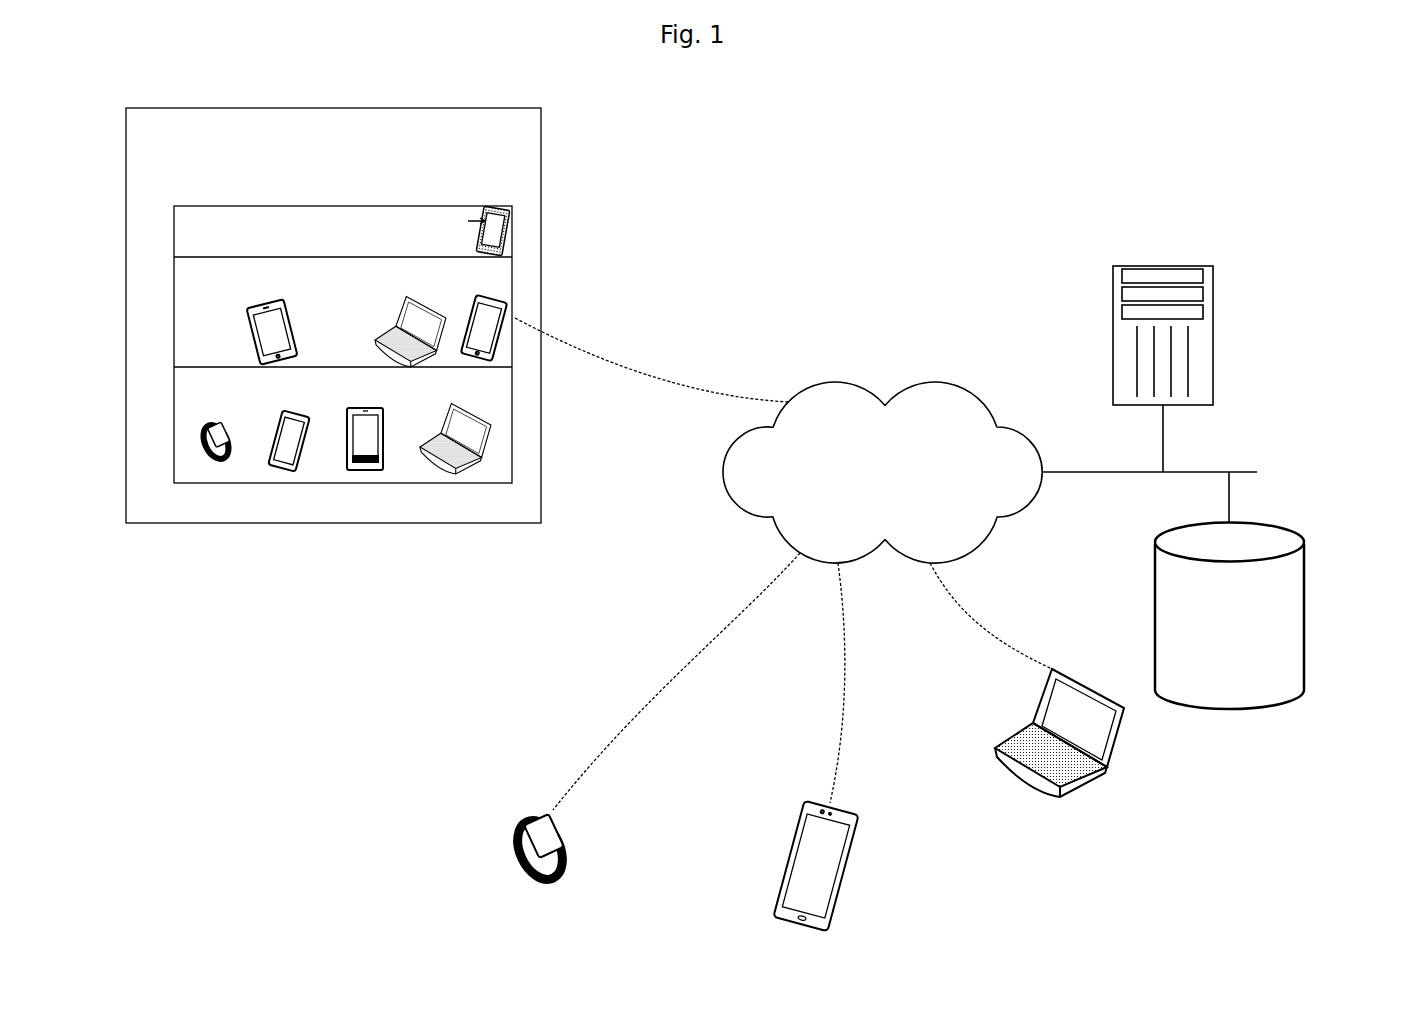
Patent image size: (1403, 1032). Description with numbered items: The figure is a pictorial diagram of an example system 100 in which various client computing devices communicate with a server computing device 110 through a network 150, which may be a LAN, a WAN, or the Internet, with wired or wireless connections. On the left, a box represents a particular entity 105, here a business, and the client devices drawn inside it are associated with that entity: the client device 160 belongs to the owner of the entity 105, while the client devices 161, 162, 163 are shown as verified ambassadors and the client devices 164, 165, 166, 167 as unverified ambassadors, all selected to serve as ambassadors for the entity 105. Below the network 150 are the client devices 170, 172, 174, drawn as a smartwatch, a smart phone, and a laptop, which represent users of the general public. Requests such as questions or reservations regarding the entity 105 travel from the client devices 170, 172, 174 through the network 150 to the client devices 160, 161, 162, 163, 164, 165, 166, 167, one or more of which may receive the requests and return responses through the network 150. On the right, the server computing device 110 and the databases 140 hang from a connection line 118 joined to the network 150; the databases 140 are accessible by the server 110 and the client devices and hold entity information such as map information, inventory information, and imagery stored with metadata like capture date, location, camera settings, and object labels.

The system 100 is at (1045, 148).
The entity 105 is at (290, 108).
The server computing device 110 is at (1216, 343).
The network connection / bus 118 is at (1226, 472).
The databases 140 is at (1306, 637).
The network 150 is at (842, 381).
The client device 160 is at (492, 224).
The client device 161 is at (253, 335).
The client device 162 is at (401, 315).
The client device 163 is at (497, 296).
The client device 164 is at (207, 460).
The client device 165 is at (277, 470).
The client device 166 is at (363, 470).
The client device 167 is at (450, 453).
The client device 170 is at (508, 887).
The client device 172 is at (773, 898).
The client device 174 is at (993, 740).